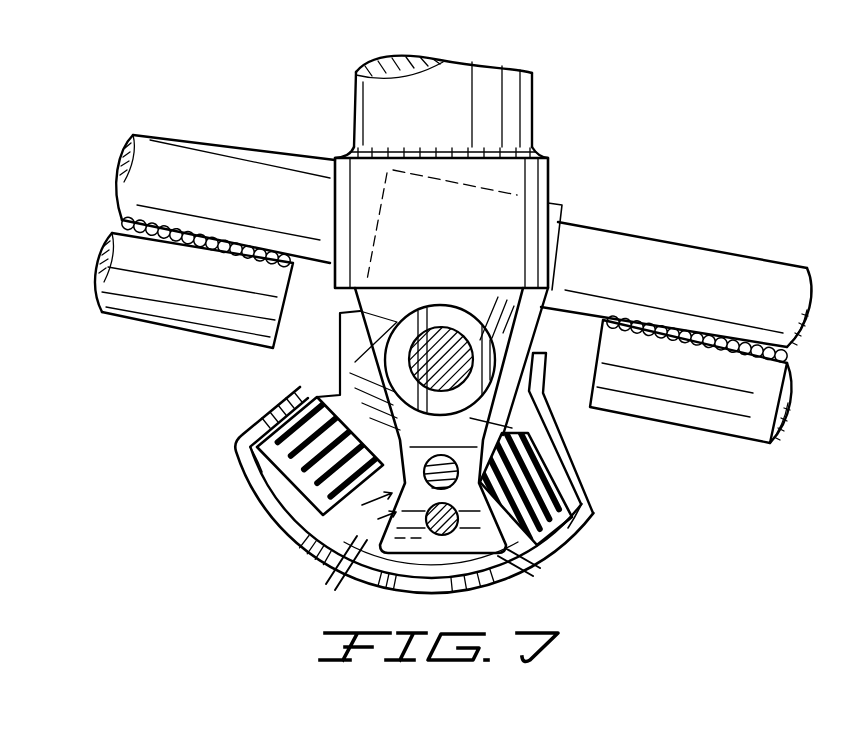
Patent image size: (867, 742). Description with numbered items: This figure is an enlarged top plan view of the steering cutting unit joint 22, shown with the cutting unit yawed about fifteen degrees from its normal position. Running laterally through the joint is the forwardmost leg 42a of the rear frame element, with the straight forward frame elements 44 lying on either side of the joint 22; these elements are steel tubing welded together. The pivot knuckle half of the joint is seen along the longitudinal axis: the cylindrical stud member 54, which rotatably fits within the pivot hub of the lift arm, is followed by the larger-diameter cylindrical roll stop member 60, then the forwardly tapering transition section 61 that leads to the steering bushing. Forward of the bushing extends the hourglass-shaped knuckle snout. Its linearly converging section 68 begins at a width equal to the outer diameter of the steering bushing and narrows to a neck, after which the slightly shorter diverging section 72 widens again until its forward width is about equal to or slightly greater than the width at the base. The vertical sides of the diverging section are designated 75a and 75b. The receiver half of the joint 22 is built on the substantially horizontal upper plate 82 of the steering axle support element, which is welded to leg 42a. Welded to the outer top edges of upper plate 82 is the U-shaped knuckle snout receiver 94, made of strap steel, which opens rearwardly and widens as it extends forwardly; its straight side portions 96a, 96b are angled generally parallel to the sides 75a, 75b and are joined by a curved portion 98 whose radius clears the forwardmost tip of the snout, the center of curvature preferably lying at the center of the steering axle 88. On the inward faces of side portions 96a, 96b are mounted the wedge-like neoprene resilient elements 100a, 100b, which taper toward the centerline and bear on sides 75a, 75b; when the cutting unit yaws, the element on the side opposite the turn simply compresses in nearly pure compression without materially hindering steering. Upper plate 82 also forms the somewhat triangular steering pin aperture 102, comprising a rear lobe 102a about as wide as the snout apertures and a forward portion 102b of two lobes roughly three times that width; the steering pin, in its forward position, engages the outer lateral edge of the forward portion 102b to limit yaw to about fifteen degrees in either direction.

The steering cutting unit joint 22 is at (193, 615).
The forwardmost leg of rear frame element 42a is at (208, 160).
The forward frame element 44 is at (122, 302).
The cylindrical stud member 54 is at (523, 82).
The roll stop member 60 is at (545, 168).
The transition section 61 is at (549, 298).
The converging section 68 is at (558, 422).
The diverging section 72 is at (473, 523).
The side of diverging section 75a is at (550, 560).
The side of diverging section 75b is at (343, 580).
The upper plate 82 is at (347, 352).
The steering axle 88 is at (456, 350).
The knuckle snout receiver 94 is at (238, 477).
The side portion of snout receiver 96a is at (582, 493).
The side portion of snout receiver 96b is at (265, 417).
The curved portion 98 is at (273, 517).
The resilient element 100a is at (580, 537).
The resilient element 100b is at (258, 445).
The steering pin aperture 102 is at (312, 548).
The rear aperture portion 102a is at (325, 378).
The forward aperture portion 102b is at (367, 560).